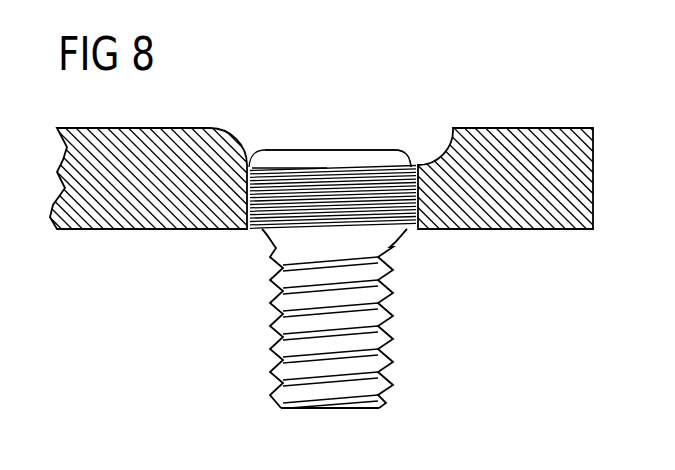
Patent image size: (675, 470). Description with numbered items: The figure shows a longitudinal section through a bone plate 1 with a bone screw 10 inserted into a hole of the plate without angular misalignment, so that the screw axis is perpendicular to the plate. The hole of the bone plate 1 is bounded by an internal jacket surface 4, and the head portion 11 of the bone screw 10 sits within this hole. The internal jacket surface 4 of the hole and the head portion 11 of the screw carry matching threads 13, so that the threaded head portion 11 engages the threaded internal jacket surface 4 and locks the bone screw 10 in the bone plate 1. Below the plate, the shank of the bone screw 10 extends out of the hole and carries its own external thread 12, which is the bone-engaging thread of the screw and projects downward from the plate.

The bone plate 1 is at (514, 110).
The internal jacket surface 4 is at (254, 166).
The bone screw 10 is at (307, 248).
The head portion 11 is at (355, 160).
The thread 12 is at (368, 362).
The matching threads 13 is at (397, 166).